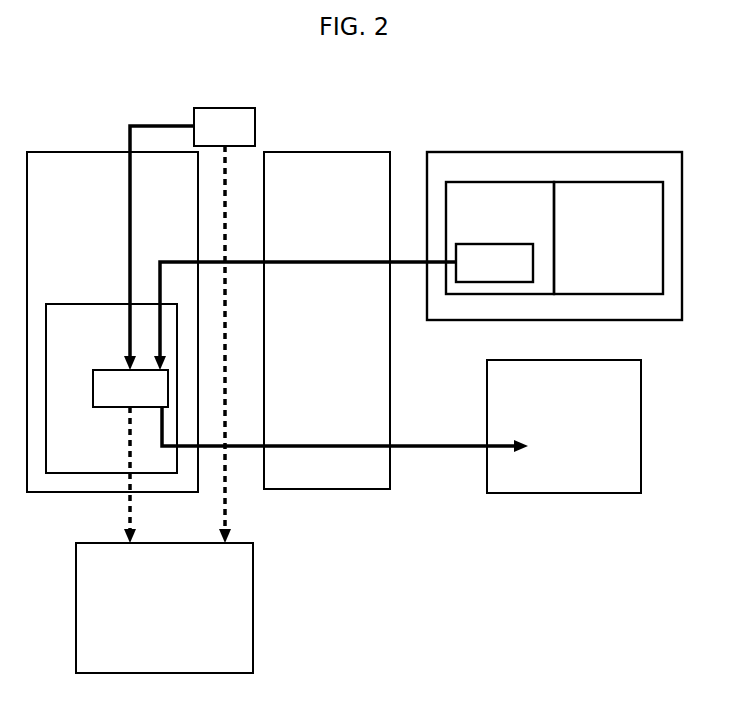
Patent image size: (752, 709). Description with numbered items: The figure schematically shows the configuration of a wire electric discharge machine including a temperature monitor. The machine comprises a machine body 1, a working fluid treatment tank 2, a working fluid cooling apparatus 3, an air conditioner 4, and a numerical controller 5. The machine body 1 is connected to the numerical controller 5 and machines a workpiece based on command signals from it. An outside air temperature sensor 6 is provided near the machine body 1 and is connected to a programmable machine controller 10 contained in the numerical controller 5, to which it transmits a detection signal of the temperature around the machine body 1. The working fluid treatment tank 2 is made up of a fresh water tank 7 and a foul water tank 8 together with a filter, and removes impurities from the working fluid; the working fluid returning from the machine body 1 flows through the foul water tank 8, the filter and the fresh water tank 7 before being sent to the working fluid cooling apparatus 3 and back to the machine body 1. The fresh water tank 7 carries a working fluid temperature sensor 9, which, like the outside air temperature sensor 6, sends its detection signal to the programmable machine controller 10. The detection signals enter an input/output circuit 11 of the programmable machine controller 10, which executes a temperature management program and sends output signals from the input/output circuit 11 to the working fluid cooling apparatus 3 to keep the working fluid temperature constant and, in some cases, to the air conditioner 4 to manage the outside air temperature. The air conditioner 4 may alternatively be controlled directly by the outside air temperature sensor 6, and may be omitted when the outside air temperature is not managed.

The machine body 1 is at (337, 152).
The working fluid treatment tank 2 is at (483, 152).
The working fluid cooling apparatus 3 is at (560, 493).
The air conditioner 4 is at (253, 625).
The numerical controller 5 is at (94, 152).
The outside air temperature sensor 6 is at (230, 108).
The fresh water tank 7 is at (513, 182).
The foul water tank 8 is at (622, 182).
The working fluid temperature sensor 9 is at (498, 283).
The programmable machine controller 10 is at (89, 304).
The input/output circuit 11 is at (113, 370).